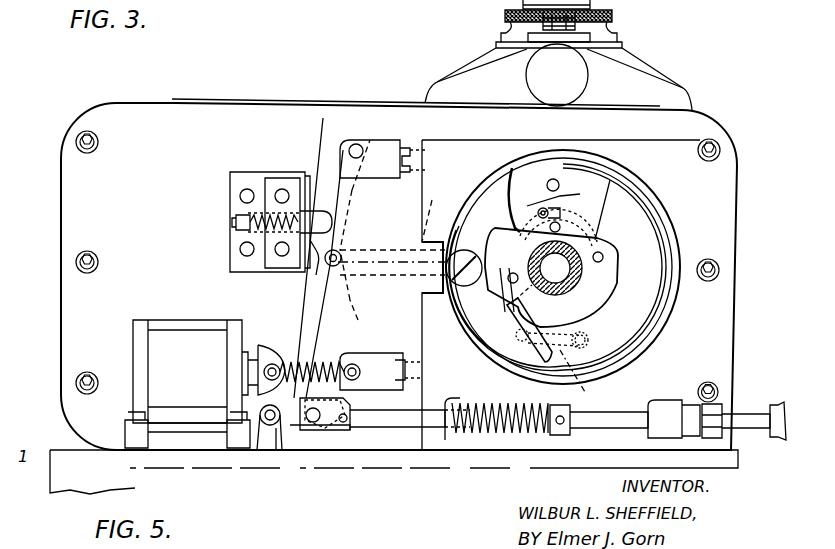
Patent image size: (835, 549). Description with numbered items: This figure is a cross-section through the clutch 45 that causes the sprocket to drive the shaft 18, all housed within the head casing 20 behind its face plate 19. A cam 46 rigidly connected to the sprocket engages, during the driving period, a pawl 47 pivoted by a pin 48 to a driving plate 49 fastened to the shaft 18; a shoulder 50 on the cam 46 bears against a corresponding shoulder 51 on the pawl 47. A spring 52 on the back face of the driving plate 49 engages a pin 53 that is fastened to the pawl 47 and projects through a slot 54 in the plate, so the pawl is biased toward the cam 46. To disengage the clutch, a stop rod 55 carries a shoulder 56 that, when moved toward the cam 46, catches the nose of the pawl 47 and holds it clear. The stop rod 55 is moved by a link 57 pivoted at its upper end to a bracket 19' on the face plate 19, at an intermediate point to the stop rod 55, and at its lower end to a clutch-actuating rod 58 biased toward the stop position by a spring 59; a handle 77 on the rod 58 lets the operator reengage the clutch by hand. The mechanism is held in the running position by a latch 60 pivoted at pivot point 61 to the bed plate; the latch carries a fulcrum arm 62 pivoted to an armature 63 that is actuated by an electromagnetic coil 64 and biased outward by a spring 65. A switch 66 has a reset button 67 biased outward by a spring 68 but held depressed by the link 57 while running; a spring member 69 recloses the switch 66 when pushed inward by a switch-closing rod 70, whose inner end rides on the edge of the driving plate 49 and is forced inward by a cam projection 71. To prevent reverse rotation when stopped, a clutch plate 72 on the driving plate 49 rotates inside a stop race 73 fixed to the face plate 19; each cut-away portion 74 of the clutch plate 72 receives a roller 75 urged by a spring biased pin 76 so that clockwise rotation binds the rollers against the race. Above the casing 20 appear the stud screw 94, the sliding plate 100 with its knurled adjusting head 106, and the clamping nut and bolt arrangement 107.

The shaft 18 is at (586, 292).
The face plate 19 is at (561, 282).
The bracket 19' is at (382, 130).
The head casing 20 is at (718, 167).
The clutch 45 is at (490, 133).
The cam 46 is at (592, 288).
The pawl 47 is at (478, 310).
The pin 48 is at (483, 283).
The driving plate 49 is at (492, 190).
The shoulder 50 is at (506, 300).
The shoulder 51 is at (556, 341).
The spring 52 is at (585, 379).
The pin 53 is at (548, 345).
The slot 54 is at (540, 320).
The stop rod 55 is at (394, 248).
The shoulder 56 is at (436, 240).
The link 57 is at (330, 292).
The clutch-actuating rod 58 is at (400, 428).
The spring 59 is at (480, 436).
The latch 60 is at (312, 432).
The pivot point 61 is at (268, 425).
The fulcrum arm 62 is at (277, 425).
The armature 63 is at (256, 367).
The electromagnetic coil 64 is at (172, 343).
The spring 65 is at (300, 440).
The switch 66 is at (243, 163).
The reset button 67 is at (323, 118).
The spring 68 is at (272, 215).
The spring member 69 is at (328, 265).
The switch-closing rod 70 is at (375, 272).
The cam projection 71 is at (462, 252).
The clutch plate 72 is at (600, 222).
The stop race 73 is at (580, 196).
The cut-away portion 74 is at (519, 215).
The roller 75 is at (548, 210).
The spring biased pin 76 is at (590, 210).
The handle 77 is at (778, 400).
The stud screw 94 is at (600, 3).
The plate 100 is at (640, 86).
The knurled adjusting head 106 is at (576, 82).
The clamping nut and bolt arrangement 107 is at (618, 30).